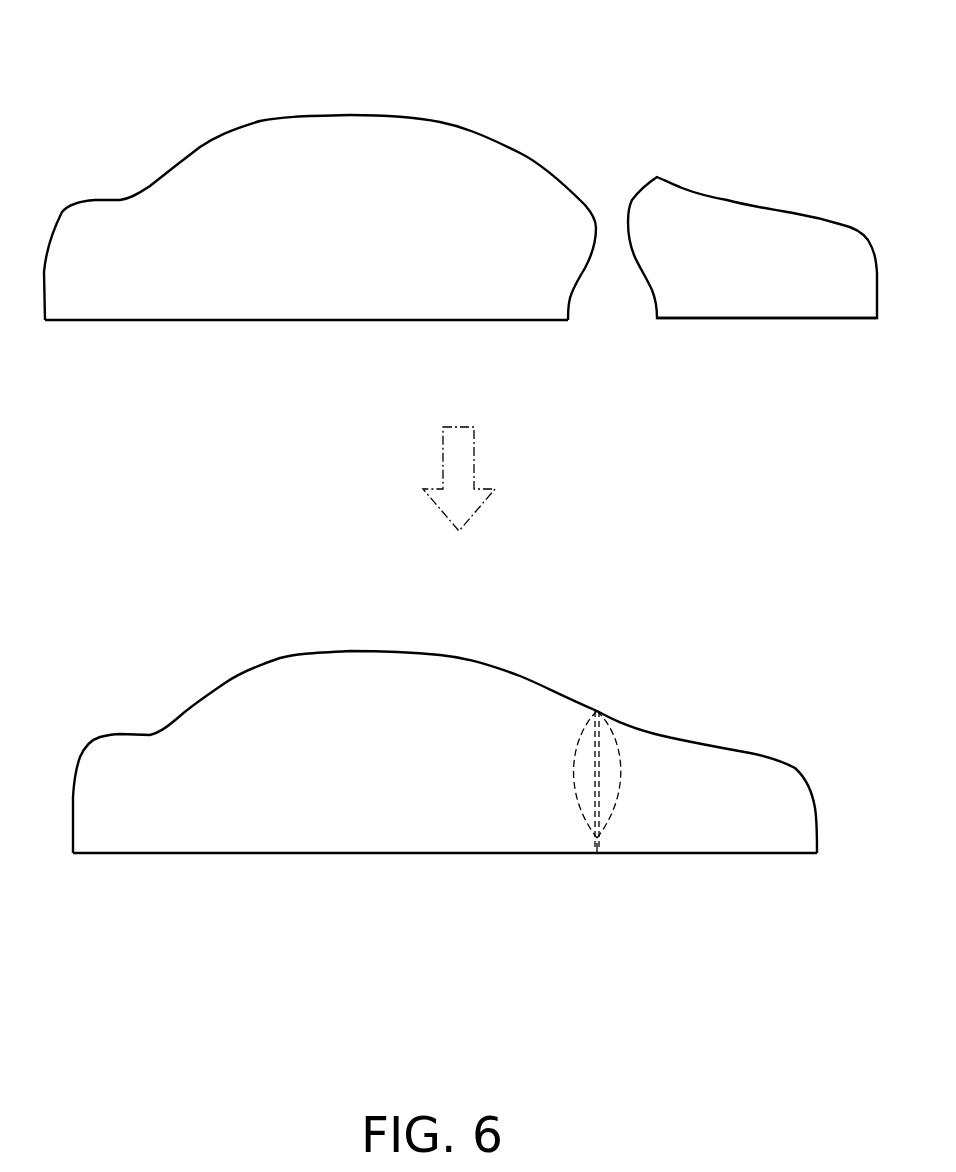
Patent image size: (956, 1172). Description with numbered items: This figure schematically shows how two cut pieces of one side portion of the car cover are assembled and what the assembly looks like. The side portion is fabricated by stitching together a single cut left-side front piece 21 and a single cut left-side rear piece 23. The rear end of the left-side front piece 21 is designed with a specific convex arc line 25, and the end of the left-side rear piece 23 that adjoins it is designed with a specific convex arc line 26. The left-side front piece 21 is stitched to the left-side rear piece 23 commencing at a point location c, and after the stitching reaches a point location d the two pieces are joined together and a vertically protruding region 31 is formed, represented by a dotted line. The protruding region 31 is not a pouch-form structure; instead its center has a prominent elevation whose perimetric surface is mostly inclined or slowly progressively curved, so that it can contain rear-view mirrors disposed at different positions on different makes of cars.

The left-side front piece 21 is at (787, 300).
The left-side rear piece 23 is at (410, 140).
The convex arc line 25 is at (628, 208).
The convex arc line 26 is at (582, 273).
The protruding region 31 is at (620, 763).
The point location c is at (597, 711).
The point location d is at (597, 843).